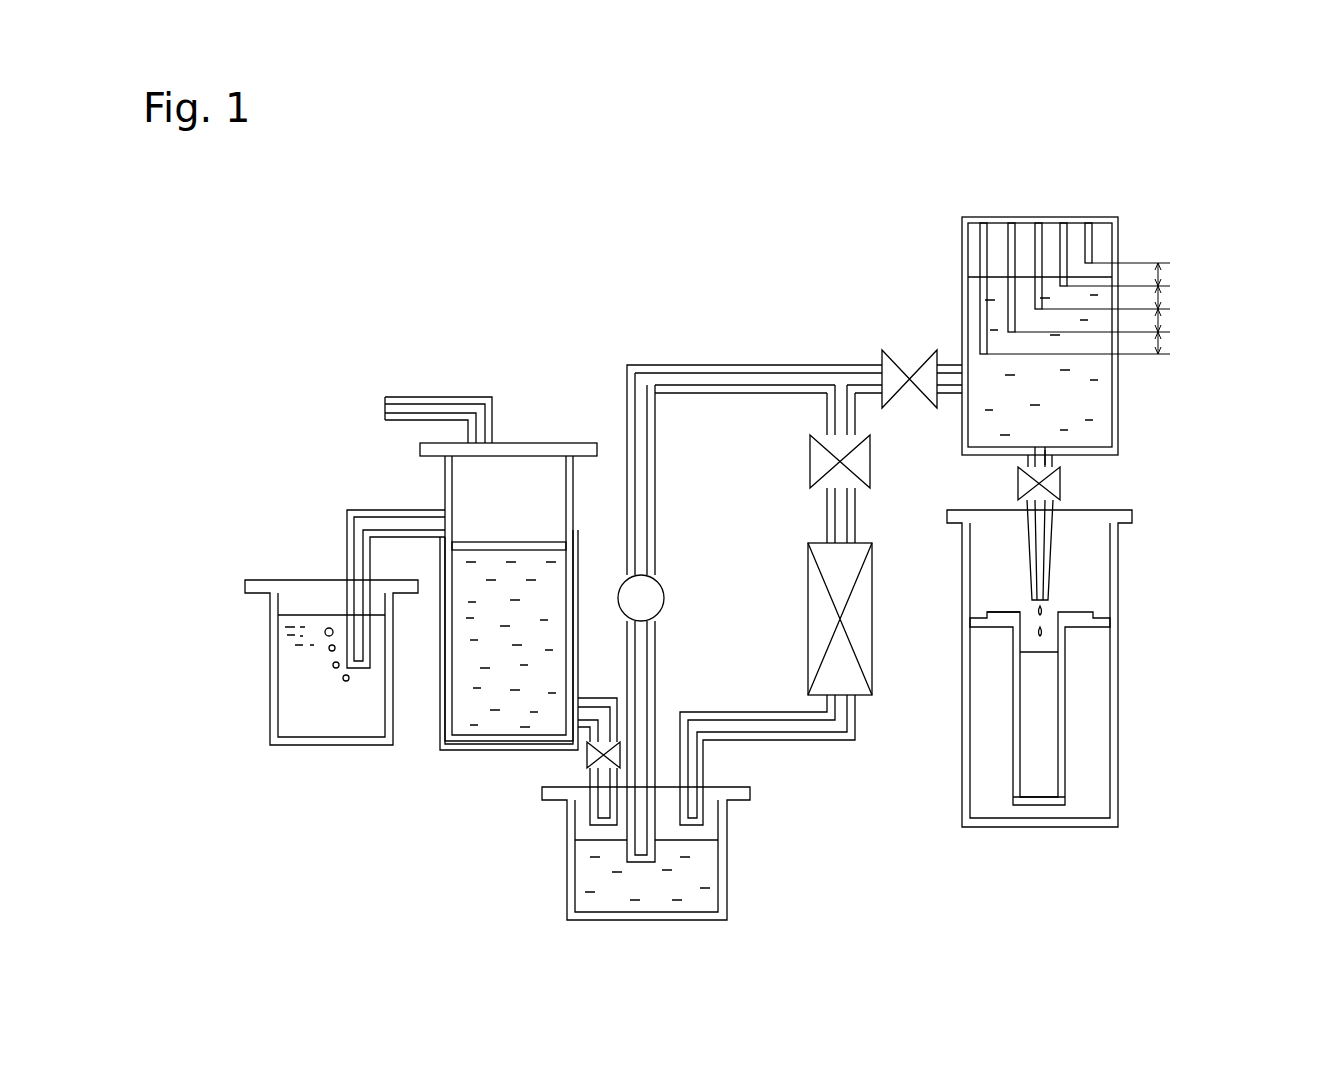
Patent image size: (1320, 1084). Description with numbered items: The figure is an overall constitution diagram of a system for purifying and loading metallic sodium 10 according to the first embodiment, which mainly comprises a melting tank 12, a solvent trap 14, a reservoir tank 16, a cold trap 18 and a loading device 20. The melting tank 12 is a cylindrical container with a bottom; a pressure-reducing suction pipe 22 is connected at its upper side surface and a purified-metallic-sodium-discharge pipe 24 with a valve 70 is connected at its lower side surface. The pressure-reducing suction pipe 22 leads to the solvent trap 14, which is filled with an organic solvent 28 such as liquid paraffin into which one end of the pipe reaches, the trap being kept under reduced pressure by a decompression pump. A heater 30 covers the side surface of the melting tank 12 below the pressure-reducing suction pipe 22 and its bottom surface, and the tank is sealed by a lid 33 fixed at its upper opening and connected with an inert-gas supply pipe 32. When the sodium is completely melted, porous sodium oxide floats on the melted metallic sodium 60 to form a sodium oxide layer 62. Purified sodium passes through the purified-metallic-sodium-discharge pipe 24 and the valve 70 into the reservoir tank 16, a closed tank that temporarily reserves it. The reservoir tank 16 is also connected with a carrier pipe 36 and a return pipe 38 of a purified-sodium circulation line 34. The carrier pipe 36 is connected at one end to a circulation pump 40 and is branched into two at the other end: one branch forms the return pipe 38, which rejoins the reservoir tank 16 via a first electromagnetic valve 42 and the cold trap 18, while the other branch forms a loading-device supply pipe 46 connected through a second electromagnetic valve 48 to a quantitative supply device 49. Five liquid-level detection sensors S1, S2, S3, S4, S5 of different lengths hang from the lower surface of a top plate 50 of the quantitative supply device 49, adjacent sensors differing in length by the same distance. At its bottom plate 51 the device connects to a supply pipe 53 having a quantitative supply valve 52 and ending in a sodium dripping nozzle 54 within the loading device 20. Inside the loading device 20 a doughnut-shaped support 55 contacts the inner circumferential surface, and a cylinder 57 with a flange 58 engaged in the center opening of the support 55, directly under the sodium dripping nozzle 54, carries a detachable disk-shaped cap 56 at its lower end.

The system for purifying and loading metallic sodium 10 is at (375, 330).
The melting tank 12 is at (505, 422).
The solvent trap 14 is at (267, 647).
The reservoir tank 16 is at (705, 880).
The cold trap 18 is at (808, 617).
The loading device 20 is at (1180, 603).
The pressure-reducing suction pipe 22 is at (395, 510).
The purified-metallic-sodium-discharge pipe 24 is at (588, 775).
The organic solvent 28 is at (316, 724).
The heater 30 is at (440, 683).
The inert-gas supply pipe 32 is at (432, 397).
The lid 33 is at (540, 443).
The purified-sodium circulation line 34 is at (745, 350).
The carrier pipe 36 is at (655, 690).
The return pipe 38 is at (815, 742).
The circulation pump 40 is at (664, 590).
The first electromagnetic valve 42 is at (813, 445).
The loading-device supply pipe 46 is at (860, 365).
The second electromagnetic valve 48 is at (910, 398).
The quantitative supply device 49 is at (1118, 395).
The top plate 50 is at (968, 217).
The bottom plate 51 is at (1085, 450).
The quantitative supply valve 52 is at (1025, 478).
The supply pipe 53 is at (1055, 462).
The sodium dripping nozzle 54 is at (1050, 570).
The support 55 is at (1095, 625).
The cap 56 is at (1040, 805).
The cylinder 57 is at (1065, 712).
The flange 58 is at (1000, 612).
The melted metallic sodium 60 is at (477, 700).
The sodium oxide layer 62 is at (500, 542).
The valve 70 is at (590, 752).
The liquid-level detection sensor S1 is at (1092, 240).
The liquid-level detection sensor S2 is at (1065, 240).
The liquid-level detection sensor S3 is at (1040, 237).
The liquid-level detection sensor S4 is at (1012, 237).
The liquid-level detection sensor S5 is at (980, 243).